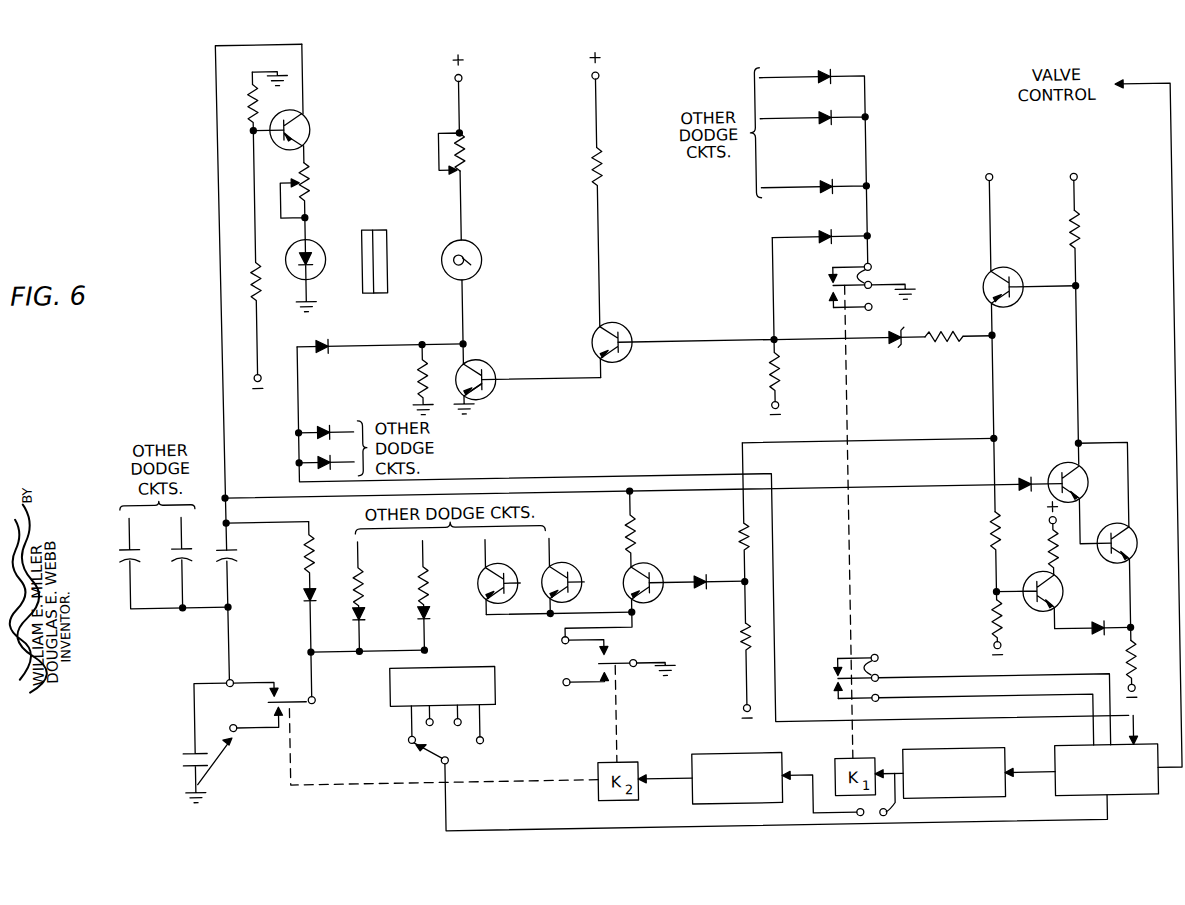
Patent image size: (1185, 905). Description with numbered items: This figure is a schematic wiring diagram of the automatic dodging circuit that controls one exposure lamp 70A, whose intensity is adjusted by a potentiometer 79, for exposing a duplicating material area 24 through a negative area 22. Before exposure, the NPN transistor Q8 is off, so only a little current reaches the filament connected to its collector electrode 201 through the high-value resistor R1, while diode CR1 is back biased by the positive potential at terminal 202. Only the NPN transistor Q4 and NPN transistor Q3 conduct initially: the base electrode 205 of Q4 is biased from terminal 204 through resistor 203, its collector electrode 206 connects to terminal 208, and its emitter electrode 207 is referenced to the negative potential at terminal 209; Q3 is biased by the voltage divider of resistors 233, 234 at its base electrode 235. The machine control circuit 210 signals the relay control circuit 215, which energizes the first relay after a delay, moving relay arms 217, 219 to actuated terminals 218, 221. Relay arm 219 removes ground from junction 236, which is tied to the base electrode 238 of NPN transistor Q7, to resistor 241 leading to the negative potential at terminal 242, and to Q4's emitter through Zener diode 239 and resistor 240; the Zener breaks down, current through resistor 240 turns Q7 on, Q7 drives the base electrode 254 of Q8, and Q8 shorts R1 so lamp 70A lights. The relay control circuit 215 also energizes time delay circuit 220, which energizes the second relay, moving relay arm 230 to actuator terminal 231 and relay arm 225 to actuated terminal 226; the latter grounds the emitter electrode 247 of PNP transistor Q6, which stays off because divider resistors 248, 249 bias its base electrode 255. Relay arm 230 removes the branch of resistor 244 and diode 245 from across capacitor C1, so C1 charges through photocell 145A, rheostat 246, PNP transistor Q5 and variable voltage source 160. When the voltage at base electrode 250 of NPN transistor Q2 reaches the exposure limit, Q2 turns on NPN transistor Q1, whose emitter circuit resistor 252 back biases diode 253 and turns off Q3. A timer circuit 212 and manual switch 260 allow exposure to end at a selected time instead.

The terminal 202 is at (461, 86).
The potentiometer 79 is at (462, 167).
The exposure lamp 70A is at (477, 268).
The PNP transistor Q5 is at (306, 130).
The rheostat 246 is at (306, 189).
The duplicating material area 24 is at (360, 236).
The negative area 22 is at (380, 236).
The photocell 145A is at (318, 277).
The collector electrode 201 is at (477, 366).
The NPN transistor Q8 is at (483, 374).
The base electrode 254 is at (489, 396).
The diode CR1 is at (324, 358).
The resistor R1 is at (410, 386).
The NPN transistor Q7 is at (620, 339).
The base electrode 238 is at (624, 362).
The junction 236 is at (762, 351).
The resistor 241 is at (774, 378).
The terminal 242 is at (764, 418).
The relay arm 219 is at (866, 282).
The actuated terminal 221 is at (824, 308).
The terminal 208 is at (982, 194).
The NPN transistor Q4 is at (978, 305).
The collector electrode 206 is at (1001, 286).
The base electrode 205 is at (1016, 300).
The emitter electrode 207 is at (1002, 322).
The terminal 204 is at (1074, 195).
The resistor 203 is at (1076, 244).
The Zener diode 239 is at (886, 362).
The resistor 240 is at (938, 360).
The base electrode 250 is at (1035, 486).
The NPN transistor Q2 is at (1050, 479).
The NPN transistor Q1 is at (1100, 538).
The resistor 233 is at (981, 540).
The resistor 234 is at (981, 630).
The terminal 209 is at (982, 662).
The base electrode 235 is at (1032, 584).
The NPN transistor Q3 is at (1053, 609).
The diode 253 is at (1078, 654).
The emitter circuit resistor 252 is at (1126, 680).
The relay arm 217 is at (866, 673).
The actuated terminal 218 is at (822, 704).
The machine control circuit 210 is at (1056, 763).
The relay control circuit 215 is at (904, 763).
The manual switch 260 is at (888, 828).
The time delay circuit 220 is at (708, 763).
The timer circuit 212 is at (378, 692).
The resistor 244 is at (294, 556).
The diode 245 is at (292, 600).
The PNP transistor Q6 is at (645, 578).
The base electrode 255 is at (660, 586).
The emitter electrode 247 is at (648, 610).
The resistor 248 is at (730, 536).
The resistor 249 is at (724, 637).
The actuated terminal 226 is at (586, 669).
The relay arm 225 is at (610, 668).
The capacitor C1 is at (210, 572).
The relay arm 230 is at (280, 690).
The actuator terminal 231 is at (262, 719).
The variable voltage source 160 is at (174, 750).